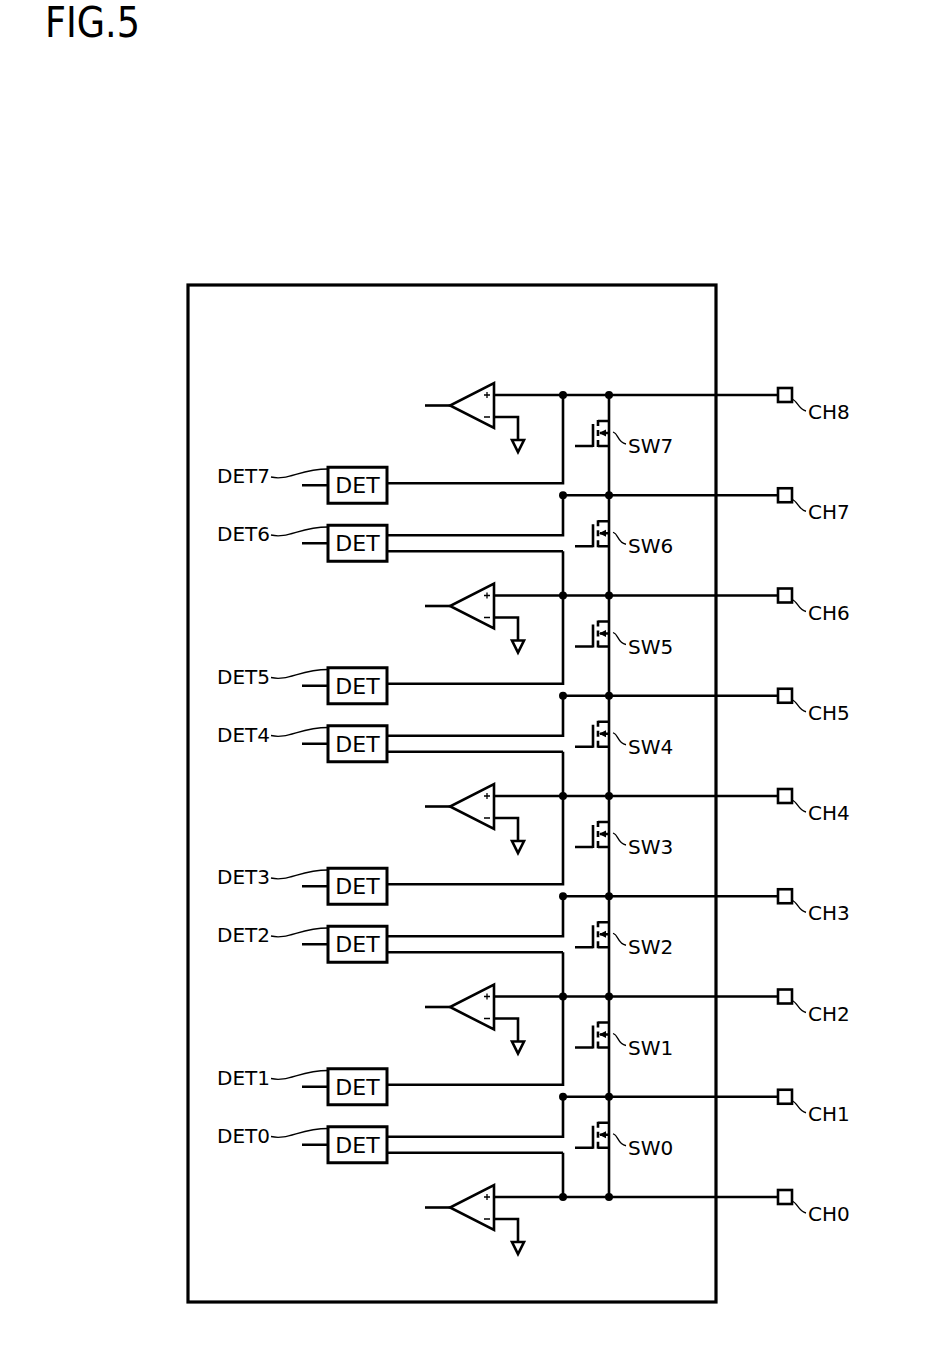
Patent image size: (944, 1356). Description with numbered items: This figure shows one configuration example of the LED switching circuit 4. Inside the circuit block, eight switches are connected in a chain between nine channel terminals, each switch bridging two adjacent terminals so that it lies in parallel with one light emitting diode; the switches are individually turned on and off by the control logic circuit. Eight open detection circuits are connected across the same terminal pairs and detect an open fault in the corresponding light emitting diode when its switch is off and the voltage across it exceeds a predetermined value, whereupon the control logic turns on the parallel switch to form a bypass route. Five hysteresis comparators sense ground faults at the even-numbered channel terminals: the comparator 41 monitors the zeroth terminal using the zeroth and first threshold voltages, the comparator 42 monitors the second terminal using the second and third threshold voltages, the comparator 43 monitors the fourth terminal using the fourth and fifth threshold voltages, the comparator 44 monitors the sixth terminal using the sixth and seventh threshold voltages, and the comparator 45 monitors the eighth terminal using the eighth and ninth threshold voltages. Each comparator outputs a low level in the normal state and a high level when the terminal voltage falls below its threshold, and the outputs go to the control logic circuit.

The LED switching circuit 4 is at (440, 285).
The comparator 41 is at (474, 1195).
The comparator 42 is at (474, 994).
The comparator 43 is at (474, 794).
The comparator 44 is at (474, 594).
The comparator 45 is at (474, 393).